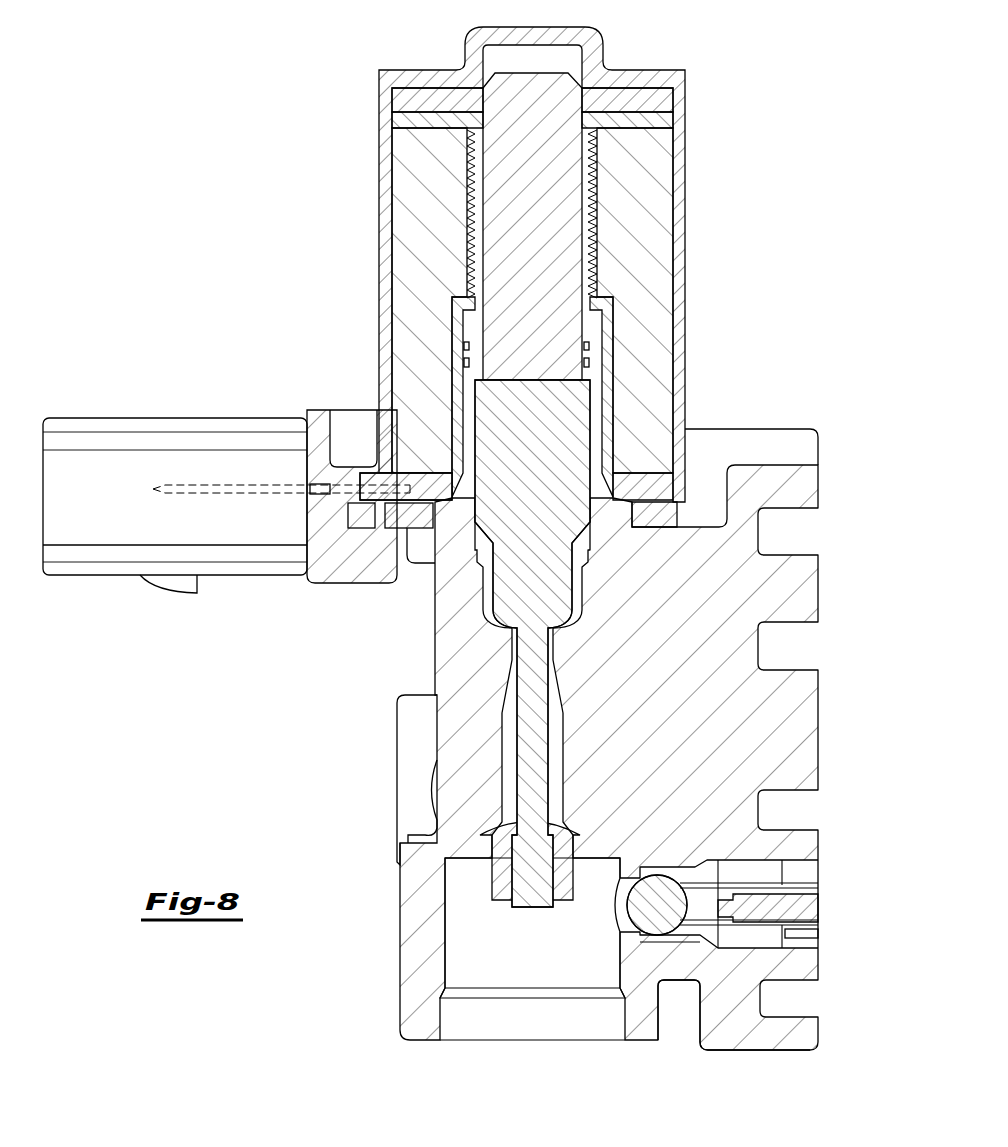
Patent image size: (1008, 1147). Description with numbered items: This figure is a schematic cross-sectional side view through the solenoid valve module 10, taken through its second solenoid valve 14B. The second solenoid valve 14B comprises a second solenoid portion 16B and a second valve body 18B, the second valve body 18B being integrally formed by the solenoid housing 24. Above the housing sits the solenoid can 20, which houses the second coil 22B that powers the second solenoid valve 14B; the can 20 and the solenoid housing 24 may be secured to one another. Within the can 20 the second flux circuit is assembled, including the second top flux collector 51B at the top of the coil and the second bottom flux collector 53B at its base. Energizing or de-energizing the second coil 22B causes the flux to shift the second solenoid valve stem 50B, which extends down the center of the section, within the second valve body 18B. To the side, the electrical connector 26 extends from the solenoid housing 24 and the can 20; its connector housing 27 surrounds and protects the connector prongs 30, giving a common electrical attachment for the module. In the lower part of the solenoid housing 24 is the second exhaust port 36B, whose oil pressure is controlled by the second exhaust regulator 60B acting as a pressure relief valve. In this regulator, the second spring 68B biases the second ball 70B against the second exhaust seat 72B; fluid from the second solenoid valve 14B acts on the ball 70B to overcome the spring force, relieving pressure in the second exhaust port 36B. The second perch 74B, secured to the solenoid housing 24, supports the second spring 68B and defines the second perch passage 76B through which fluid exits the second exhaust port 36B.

The solenoid valve module 10 is at (205, 252).
The second solenoid valve 14B is at (355, 278).
The second solenoid portion 16B is at (562, 238).
The second valve body 18B is at (470, 655).
The solenoid can 20 is at (383, 180).
The second coil 22B is at (405, 325).
The solenoid housing 24 is at (398, 892).
The electrical connector 26 is at (179, 358).
The connector housing 27 is at (96, 415).
The connector prongs 30 is at (238, 482).
The second exhaust port 36B is at (613, 905).
The second solenoid valve stem 50B is at (523, 766).
The second top flux collector 51B is at (413, 102).
The second bottom flux collector 53B is at (665, 512).
The second exhaust regulator 60B is at (728, 962).
The second spring 68B is at (755, 868).
The second ball 70B is at (660, 889).
The second exhaust seat 72B is at (627, 882).
The second perch 74B is at (810, 900).
The second perch passage 76B is at (805, 932).